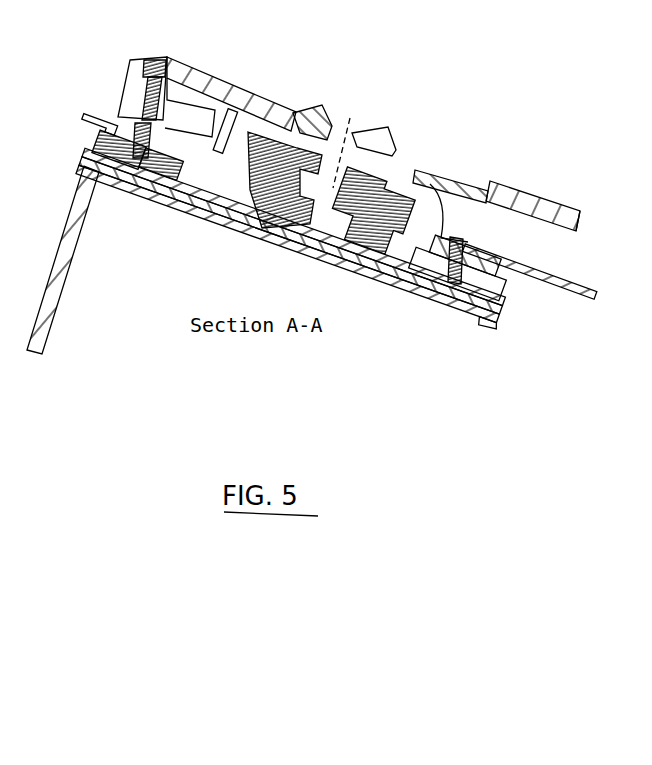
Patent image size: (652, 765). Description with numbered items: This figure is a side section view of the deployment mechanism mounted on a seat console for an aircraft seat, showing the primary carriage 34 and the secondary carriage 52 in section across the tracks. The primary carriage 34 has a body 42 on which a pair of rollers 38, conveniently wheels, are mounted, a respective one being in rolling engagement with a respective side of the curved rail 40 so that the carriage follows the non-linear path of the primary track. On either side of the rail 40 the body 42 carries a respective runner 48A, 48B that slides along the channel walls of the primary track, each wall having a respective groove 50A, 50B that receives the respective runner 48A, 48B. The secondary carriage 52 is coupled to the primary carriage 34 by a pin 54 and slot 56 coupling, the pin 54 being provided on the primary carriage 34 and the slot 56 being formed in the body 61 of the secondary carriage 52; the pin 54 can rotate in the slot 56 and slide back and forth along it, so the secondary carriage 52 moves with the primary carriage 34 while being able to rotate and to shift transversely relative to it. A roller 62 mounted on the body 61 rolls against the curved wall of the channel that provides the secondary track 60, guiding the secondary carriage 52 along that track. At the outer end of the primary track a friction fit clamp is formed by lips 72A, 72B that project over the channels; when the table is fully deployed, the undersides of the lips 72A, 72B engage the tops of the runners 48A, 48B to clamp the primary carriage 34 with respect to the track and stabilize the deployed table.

The primary carriage 34 is at (224, 135).
The rollers 38 is at (240, 192).
The rail 40 is at (288, 200).
The body 42 is at (427, 207).
The runner 48A is at (432, 262).
The runner 48B is at (192, 183).
The groove 50A is at (458, 273).
The groove 50B is at (162, 183).
The secondary carriage 52 is at (568, 202).
The pin 54 is at (380, 140).
The slot 56 is at (403, 167).
The secondary track 60 is at (124, 160).
The body 61 is at (573, 222).
The roller 62 is at (127, 140).
The lip 72A is at (447, 252).
The lip 72B is at (199, 142).